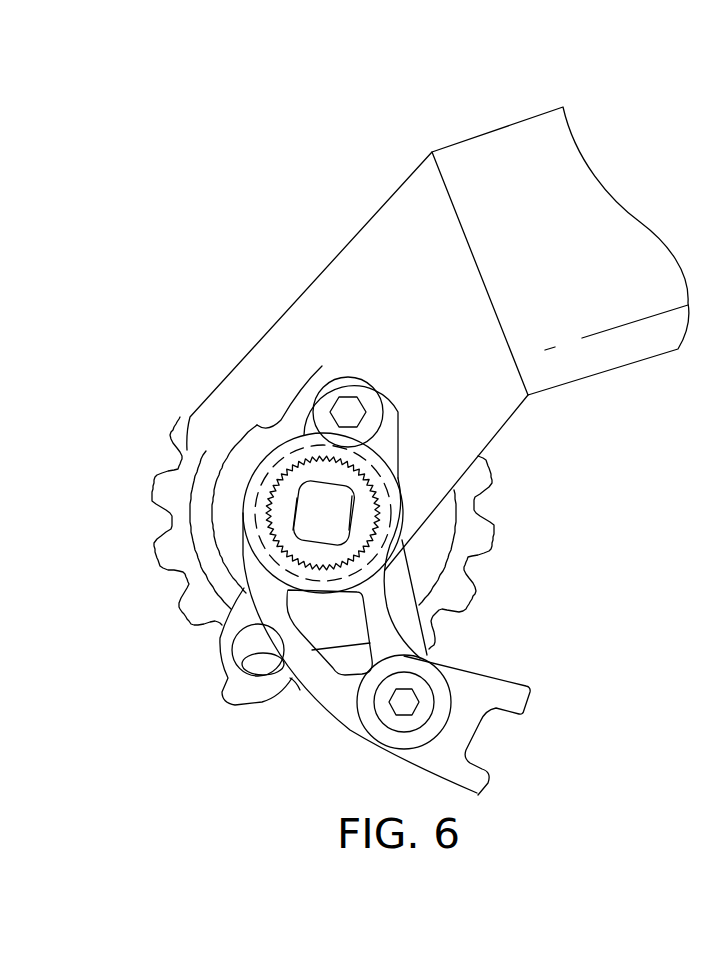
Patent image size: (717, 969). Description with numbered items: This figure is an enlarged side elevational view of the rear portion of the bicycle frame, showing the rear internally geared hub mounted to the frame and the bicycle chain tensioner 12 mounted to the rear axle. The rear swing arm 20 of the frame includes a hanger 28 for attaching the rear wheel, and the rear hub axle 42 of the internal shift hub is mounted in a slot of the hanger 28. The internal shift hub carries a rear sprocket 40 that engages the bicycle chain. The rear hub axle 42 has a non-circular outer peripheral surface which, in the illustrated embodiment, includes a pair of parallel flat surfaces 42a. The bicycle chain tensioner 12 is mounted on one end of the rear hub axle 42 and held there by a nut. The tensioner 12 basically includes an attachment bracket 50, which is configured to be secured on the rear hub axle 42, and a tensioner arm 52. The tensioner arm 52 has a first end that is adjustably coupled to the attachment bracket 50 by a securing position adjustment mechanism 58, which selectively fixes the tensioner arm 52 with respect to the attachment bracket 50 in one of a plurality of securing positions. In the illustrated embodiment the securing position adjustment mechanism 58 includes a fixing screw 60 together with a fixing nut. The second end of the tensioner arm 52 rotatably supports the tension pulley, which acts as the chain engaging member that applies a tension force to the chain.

The bicycle chain tensioner 12 is at (300, 712).
The rear swing arm 20 is at (505, 125).
The hanger 28 is at (222, 662).
The rear sprocket 40 is at (485, 522).
The rear hub axle 42 is at (318, 520).
The flat surfaces 42a is at (297, 500).
The attachment bracket 50 is at (387, 581).
The tensioner arm 52 is at (512, 680).
The securing position adjustment mechanism 58 is at (435, 690).
The fixing screw 60 is at (407, 733).